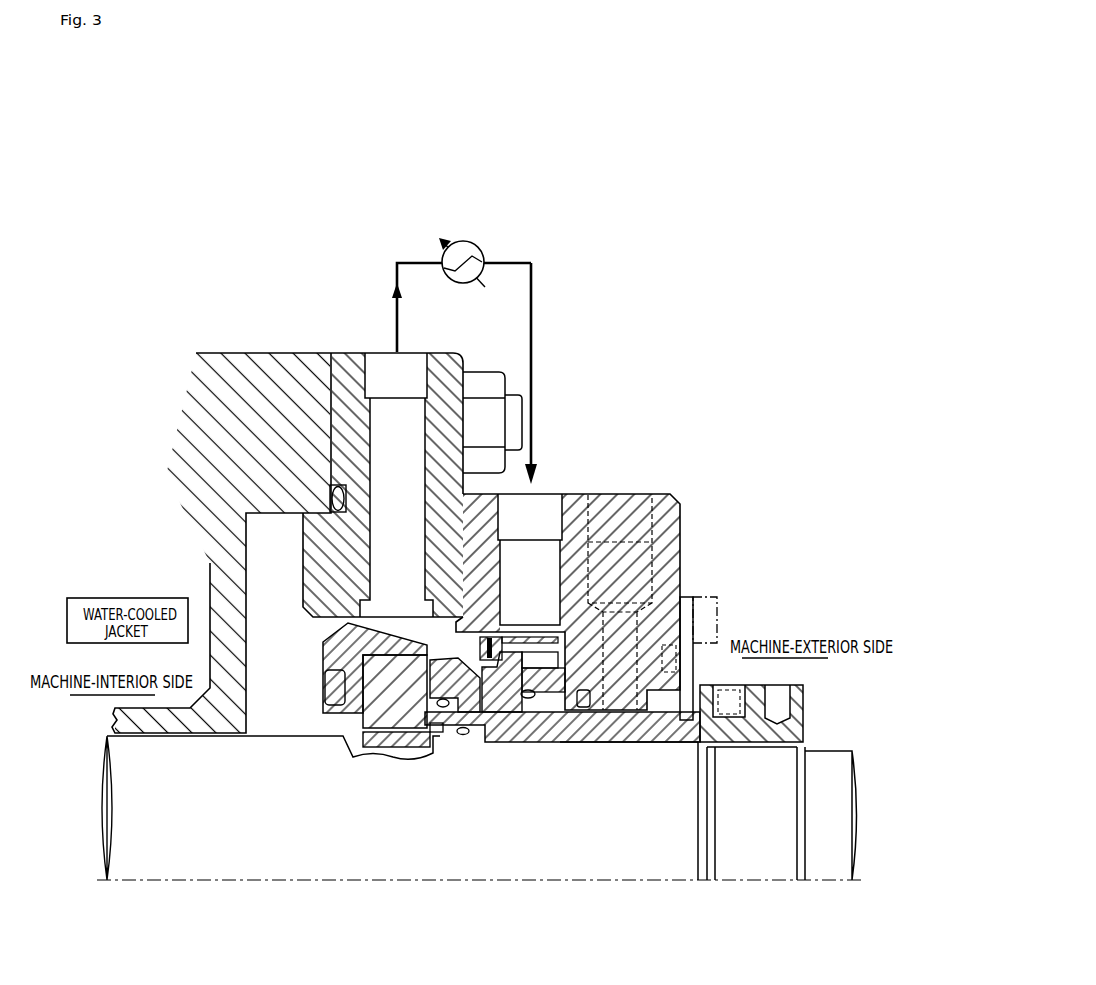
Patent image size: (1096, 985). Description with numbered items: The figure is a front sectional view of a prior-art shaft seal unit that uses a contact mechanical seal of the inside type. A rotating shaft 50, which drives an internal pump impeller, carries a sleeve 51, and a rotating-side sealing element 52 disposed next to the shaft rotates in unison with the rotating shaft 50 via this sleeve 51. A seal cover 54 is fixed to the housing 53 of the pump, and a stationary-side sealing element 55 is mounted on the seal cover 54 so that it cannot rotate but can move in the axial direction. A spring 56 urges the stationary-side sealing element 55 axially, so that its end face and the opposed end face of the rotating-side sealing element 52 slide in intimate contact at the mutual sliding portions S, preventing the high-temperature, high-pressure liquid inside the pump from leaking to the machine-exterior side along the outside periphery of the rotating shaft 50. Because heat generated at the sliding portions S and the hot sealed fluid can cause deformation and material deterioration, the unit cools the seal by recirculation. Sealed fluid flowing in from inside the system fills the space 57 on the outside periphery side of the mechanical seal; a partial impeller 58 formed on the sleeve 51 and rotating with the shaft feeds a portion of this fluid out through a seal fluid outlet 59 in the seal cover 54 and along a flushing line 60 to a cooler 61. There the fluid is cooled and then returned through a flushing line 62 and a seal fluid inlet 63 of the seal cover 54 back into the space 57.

The rotating shaft 50 is at (643, 835).
The sleeve 51 is at (650, 716).
The rotating-side sealing element 52 is at (412, 676).
The housing 53 is at (241, 366).
The seal cover 54 is at (670, 494).
The stationary-side sealing element 55 is at (522, 692).
The spring 56 is at (580, 712).
The space 57 is at (468, 632).
The partial impeller 58 is at (403, 627).
The seal fluid outlet 59 is at (390, 366).
The flushing line 60 is at (417, 263).
The cooler 61 is at (485, 243).
The flushing line 62 is at (532, 327).
The seal fluid inlet 63 is at (537, 500).
The sliding portions S is at (482, 700).